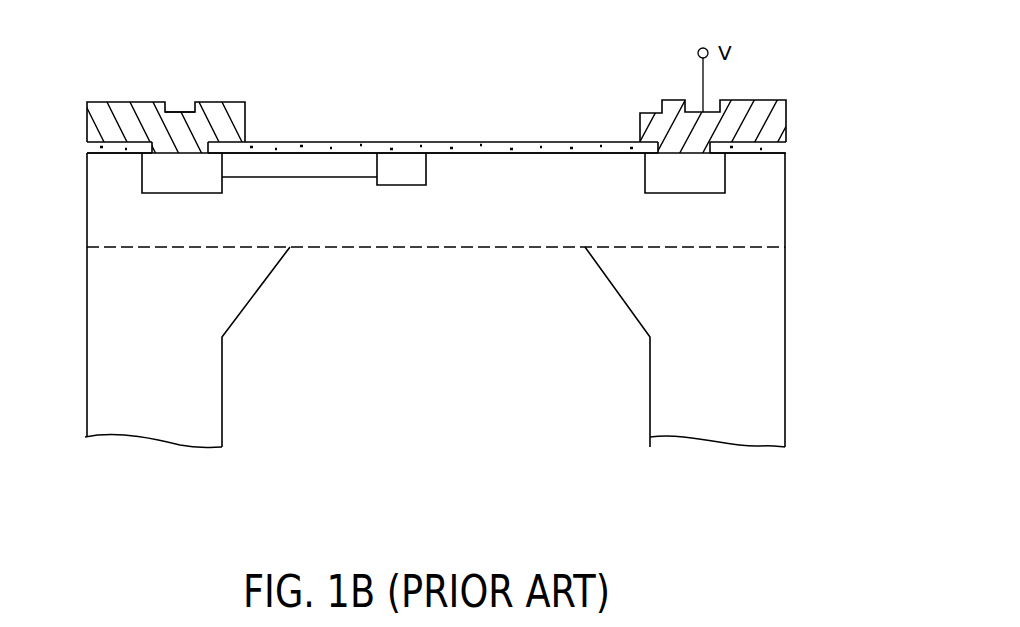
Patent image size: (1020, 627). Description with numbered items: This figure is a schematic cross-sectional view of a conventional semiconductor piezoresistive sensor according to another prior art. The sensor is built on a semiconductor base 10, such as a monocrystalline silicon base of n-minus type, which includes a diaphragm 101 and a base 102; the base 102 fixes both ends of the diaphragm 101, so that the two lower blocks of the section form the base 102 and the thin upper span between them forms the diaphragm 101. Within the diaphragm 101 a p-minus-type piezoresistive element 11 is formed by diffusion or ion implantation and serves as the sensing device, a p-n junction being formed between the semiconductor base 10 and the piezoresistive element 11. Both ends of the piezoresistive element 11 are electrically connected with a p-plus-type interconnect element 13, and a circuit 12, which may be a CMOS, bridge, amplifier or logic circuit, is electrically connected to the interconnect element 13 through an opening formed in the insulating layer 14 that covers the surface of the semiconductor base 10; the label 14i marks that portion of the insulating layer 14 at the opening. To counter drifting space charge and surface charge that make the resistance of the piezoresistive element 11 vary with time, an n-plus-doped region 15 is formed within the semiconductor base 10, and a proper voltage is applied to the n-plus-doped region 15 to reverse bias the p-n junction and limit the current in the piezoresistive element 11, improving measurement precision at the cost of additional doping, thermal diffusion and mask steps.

The semiconductor base 10 is at (667, 522).
The diaphragm 101 is at (494, 210).
The base 102 is at (176, 415).
The piezoresistive element 11 is at (325, 177).
The circuit 12 is at (133, 100).
The p-plus-type interconnect element 13 is at (200, 193).
The insulating layer 14 is at (563, 143).
The insulating layer portion 14i is at (198, 138).
The n-plus-doped region 15 is at (718, 174).